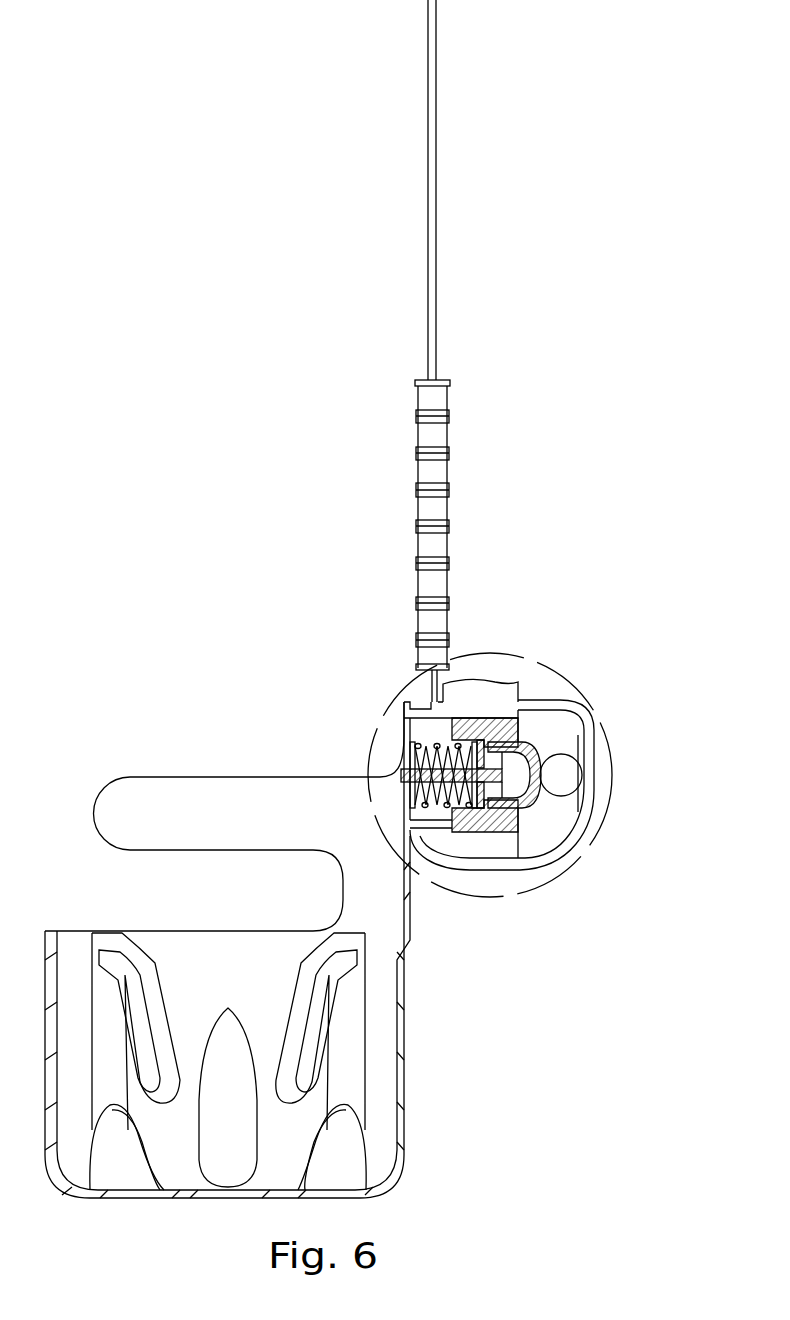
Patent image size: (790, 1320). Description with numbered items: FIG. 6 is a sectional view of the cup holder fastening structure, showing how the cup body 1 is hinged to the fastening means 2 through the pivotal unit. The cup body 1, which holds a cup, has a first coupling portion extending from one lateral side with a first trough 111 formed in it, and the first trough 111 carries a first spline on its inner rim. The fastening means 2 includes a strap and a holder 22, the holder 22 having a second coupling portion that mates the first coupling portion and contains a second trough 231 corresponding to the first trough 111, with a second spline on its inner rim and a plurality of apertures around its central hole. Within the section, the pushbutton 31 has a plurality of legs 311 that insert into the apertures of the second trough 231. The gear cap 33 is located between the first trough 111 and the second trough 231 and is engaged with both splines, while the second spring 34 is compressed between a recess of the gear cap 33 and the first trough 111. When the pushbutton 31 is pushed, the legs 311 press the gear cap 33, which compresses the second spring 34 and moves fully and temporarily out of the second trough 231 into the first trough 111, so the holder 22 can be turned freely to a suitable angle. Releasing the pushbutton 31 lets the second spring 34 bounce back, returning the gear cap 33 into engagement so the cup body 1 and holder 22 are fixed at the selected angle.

The cup body 1 is at (150, 797).
The first trough 111 is at (418, 720).
The fastening means 2 is at (616, 890).
The holder 22 is at (604, 750).
The second trough 231 is at (487, 775).
The pushbutton 31 is at (540, 745).
The legs 311 is at (487, 775).
The gear cap 33 is at (453, 820).
The second spring 34 is at (408, 760).